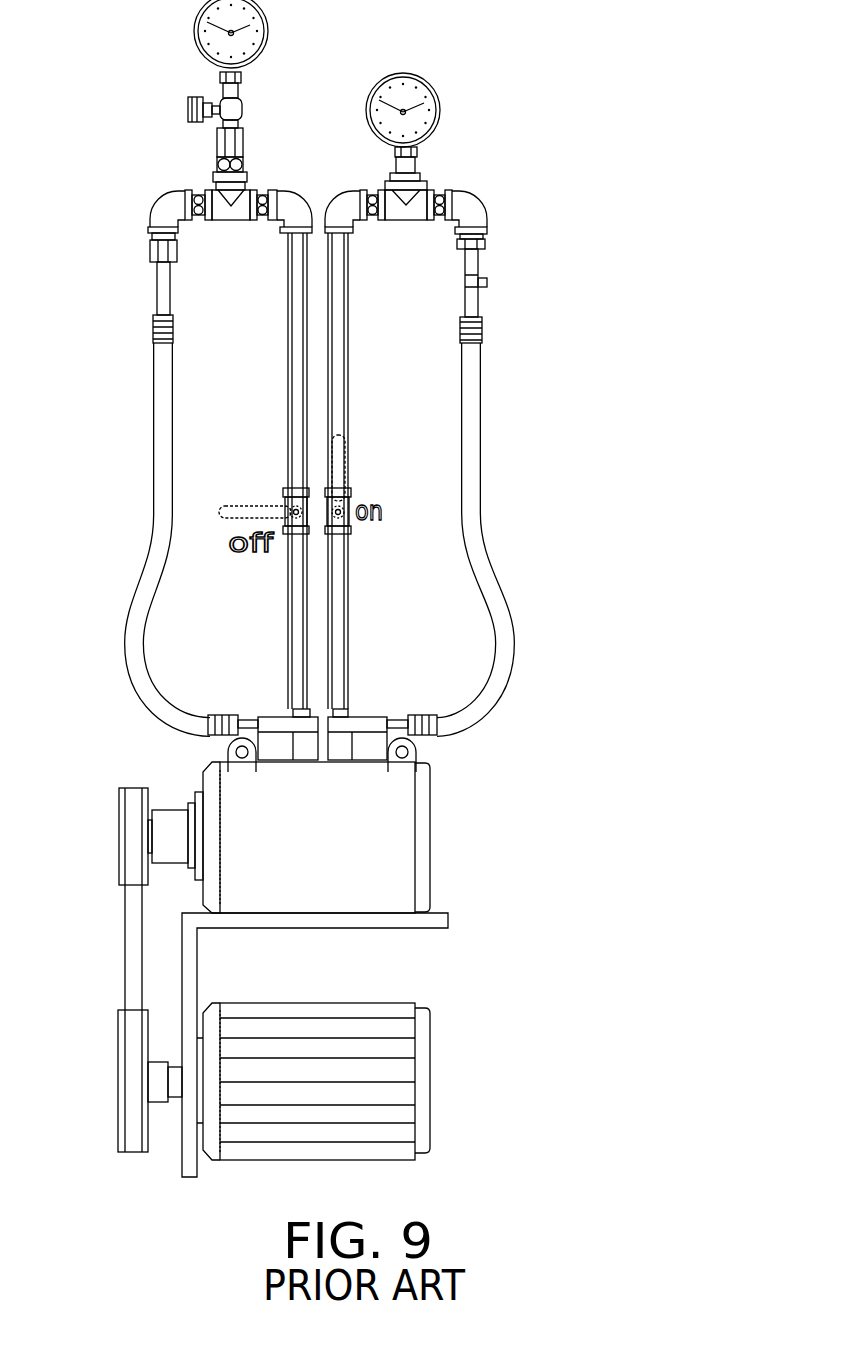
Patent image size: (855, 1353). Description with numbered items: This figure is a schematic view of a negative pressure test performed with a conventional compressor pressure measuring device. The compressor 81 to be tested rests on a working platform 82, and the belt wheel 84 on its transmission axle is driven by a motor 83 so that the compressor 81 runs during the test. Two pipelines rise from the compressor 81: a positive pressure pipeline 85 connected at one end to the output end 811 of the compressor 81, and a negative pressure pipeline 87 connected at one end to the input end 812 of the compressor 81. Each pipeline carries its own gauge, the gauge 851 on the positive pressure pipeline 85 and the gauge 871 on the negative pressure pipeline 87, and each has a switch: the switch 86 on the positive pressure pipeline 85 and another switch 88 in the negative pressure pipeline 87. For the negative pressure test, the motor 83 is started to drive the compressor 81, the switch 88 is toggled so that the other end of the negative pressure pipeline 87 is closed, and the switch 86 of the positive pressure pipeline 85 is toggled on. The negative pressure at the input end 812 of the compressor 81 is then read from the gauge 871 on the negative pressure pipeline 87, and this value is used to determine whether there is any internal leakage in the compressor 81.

The compressor 81 is at (417, 815).
The output end 811 is at (372, 730).
The input end 812 is at (270, 730).
The working platform 82 is at (440, 913).
The motor 83 is at (388, 1010).
The belt wheel 84 is at (118, 828).
The positive pressure pipeline 85 is at (500, 598).
The gauge 851 is at (443, 97).
The switch 86 is at (342, 470).
The negative pressure pipeline 87 is at (156, 467).
The gauge 871 is at (194, 33).
The switch 88 is at (253, 505).